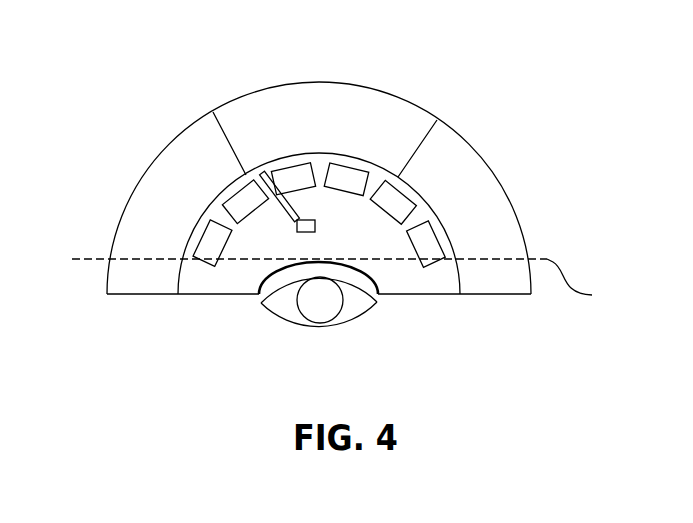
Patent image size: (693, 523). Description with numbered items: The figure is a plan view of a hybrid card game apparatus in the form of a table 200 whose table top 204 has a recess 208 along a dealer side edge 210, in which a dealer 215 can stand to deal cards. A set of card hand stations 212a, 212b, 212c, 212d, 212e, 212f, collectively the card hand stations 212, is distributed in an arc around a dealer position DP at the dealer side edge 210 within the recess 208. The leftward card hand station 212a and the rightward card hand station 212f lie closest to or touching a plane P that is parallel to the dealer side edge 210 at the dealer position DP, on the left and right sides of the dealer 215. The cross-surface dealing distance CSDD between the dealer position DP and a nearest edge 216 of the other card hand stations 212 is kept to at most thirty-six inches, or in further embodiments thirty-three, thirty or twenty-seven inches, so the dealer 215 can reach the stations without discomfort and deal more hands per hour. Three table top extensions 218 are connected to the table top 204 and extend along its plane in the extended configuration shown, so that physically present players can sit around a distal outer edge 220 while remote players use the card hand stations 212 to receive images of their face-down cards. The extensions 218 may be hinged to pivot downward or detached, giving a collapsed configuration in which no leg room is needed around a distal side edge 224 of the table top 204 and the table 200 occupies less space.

The table 200 is at (142, 100).
The table top 204 is at (237, 285).
The recess 208 is at (377, 298).
The dealer side edge 210 is at (420, 298).
The card hand stations 212 is at (340, 144).
The leftward card hand station 212a is at (195, 228).
The card hand station 212b is at (237, 187).
The card hand station 212c is at (288, 172).
The card hand station 212d is at (353, 173).
The card hand station 212e is at (407, 197).
The rightward card hand station 212f is at (425, 242).
The dealer 215 is at (341, 311).
The nearest edge 216 is at (256, 213).
The table top extensions 218 is at (280, 103).
The distal outer edge 220 is at (370, 83).
The distal side edge 224 is at (372, 152).
The cross-surface dealing distance CSDD is at (342, 192).
The dealer position DP is at (317, 262).
The plane P is at (343, 282).